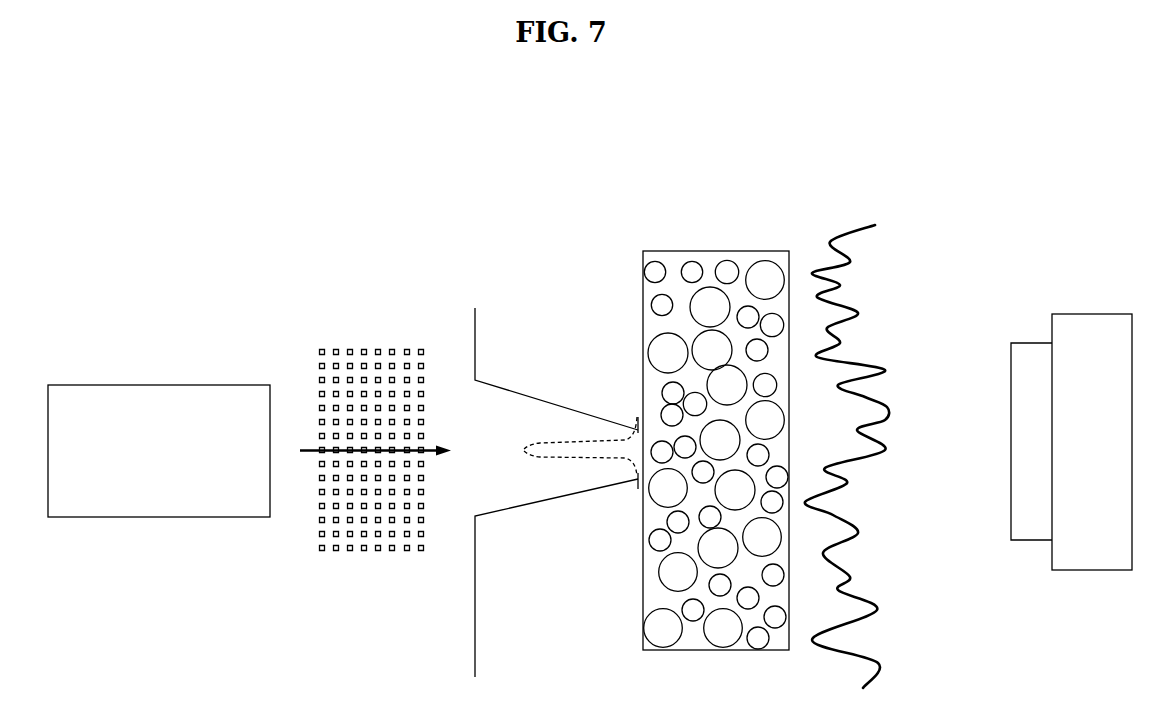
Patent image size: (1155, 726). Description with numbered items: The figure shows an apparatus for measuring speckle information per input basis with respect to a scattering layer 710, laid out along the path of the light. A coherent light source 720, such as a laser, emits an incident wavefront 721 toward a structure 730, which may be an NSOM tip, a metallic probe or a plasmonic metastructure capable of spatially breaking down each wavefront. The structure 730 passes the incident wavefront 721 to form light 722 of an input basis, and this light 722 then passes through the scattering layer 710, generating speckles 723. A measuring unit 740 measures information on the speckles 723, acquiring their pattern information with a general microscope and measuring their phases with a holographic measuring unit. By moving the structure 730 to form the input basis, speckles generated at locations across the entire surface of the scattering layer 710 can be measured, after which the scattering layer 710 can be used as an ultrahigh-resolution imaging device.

The scattering layer 710 is at (715, 251).
The coherent light source 720 is at (157, 385).
The incident wavefront 721 is at (350, 351).
The light of an input basis 722 is at (572, 441).
The speckles 723 is at (850, 228).
The structure 730 is at (475, 308).
The measuring unit 740 is at (1090, 314).